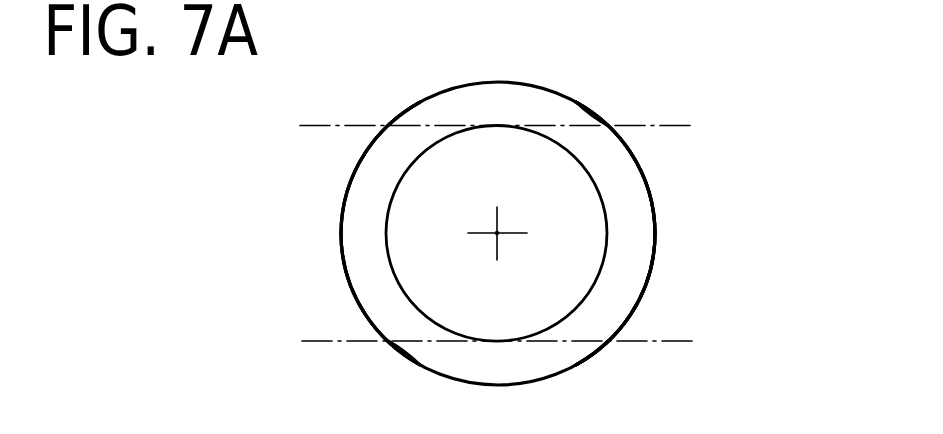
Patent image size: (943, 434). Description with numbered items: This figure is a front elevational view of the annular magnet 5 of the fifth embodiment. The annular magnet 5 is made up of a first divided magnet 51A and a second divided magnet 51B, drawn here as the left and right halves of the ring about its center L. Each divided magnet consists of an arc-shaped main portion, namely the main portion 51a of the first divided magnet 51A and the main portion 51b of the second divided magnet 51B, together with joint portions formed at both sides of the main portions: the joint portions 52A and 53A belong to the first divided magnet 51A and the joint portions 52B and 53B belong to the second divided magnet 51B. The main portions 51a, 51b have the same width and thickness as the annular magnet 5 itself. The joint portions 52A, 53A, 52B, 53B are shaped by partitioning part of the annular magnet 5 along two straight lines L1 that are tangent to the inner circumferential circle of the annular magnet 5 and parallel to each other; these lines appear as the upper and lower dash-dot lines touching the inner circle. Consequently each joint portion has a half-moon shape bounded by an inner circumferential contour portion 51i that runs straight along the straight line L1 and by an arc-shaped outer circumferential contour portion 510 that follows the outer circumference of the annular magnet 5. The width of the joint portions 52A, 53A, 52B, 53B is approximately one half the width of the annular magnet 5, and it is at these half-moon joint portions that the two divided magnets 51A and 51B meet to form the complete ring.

The annular magnet 5 is at (703, 226).
The first divided magnet 51A is at (332, 230).
The second divided magnet 51B is at (662, 218).
The arc-shaped main portion 51a is at (352, 273).
The arc-shaped main portion 51b is at (640, 282).
The inner circumferential contour portion 51i is at (568, 125).
The outer circumferential contour portion 510 is at (547, 88).
The joint portion 52A is at (598, 108).
The joint portion 52B is at (405, 84).
The joint portion 53A is at (605, 357).
The joint portion 53B is at (397, 374).
The straight line L1 is at (480, 235).
The center axis L is at (495, 231).